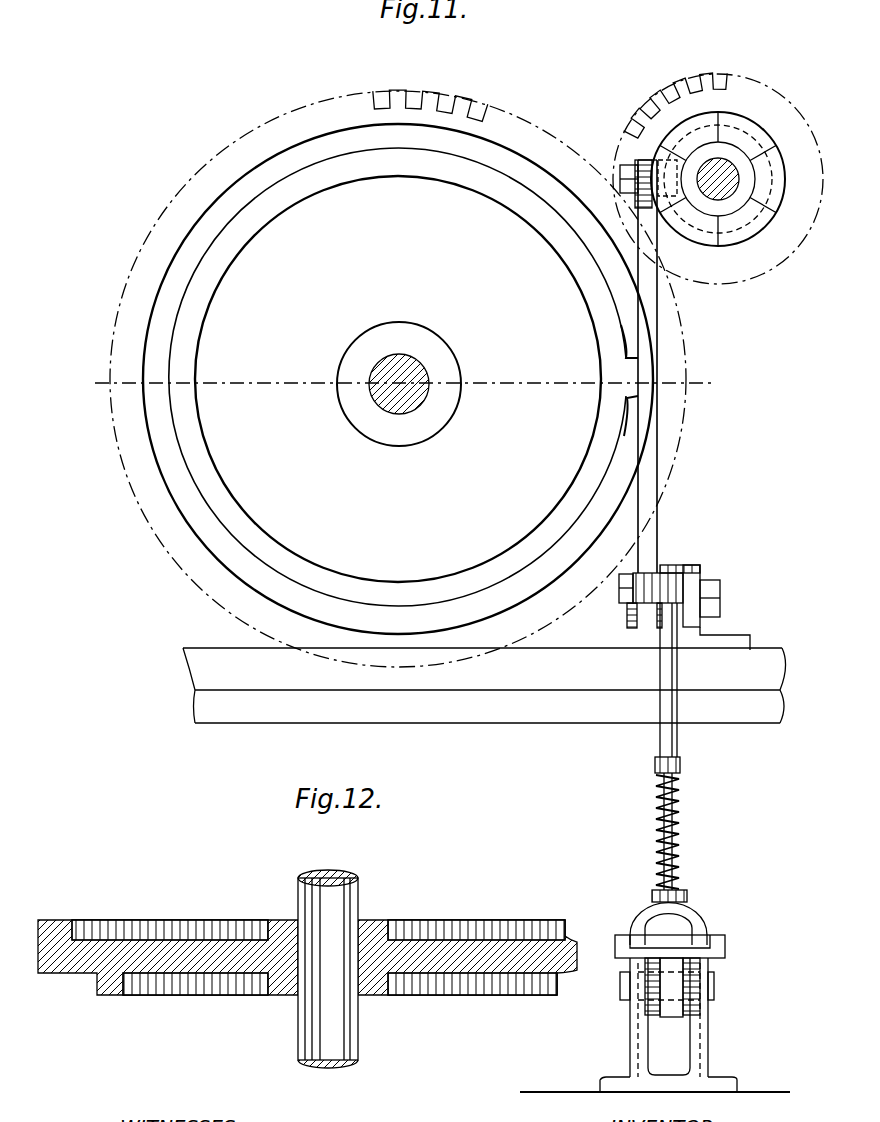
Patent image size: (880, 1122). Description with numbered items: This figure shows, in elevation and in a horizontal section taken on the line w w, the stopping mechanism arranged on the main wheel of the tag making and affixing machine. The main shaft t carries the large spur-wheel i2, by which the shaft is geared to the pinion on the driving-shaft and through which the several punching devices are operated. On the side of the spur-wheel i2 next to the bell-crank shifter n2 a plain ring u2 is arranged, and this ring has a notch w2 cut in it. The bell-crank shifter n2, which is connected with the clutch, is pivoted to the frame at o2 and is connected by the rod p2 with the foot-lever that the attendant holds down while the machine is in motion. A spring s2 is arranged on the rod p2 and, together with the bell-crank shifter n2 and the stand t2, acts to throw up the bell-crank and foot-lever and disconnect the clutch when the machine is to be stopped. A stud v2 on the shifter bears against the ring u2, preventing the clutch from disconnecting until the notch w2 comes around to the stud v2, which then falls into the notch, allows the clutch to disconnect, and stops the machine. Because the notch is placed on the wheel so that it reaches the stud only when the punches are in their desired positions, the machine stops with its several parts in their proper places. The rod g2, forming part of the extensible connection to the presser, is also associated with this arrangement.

In FIG. 11, the section line w- w is at (406, 382).
In FIG. 11, the ring u2 is at (602, 452).
In FIG. 12, the ring u2 is at (508, 998).
In FIG. 11, the notch w2 is at (617, 358).
In FIG. 12, the notch w2 is at (548, 985).
In FIG. 11, the stud v2 is at (616, 392).
In FIG. 11, the bell-crank shifter n2 is at (650, 492).
In FIG. 11, the pivot of bell-crank shifter o2 is at (700, 590).
In FIG. 11, the rod p2 is at (680, 757).
In FIG. 11, the spring s2 is at (680, 872).
In FIG. 11, the rod g2 is at (725, 950).
In FIG. 11, the stand t2 is at (700, 1020).
In FIG. 12, the main shaft t is at (358, 890).
In FIG. 12, the spur-wheel i2 is at (455, 920).